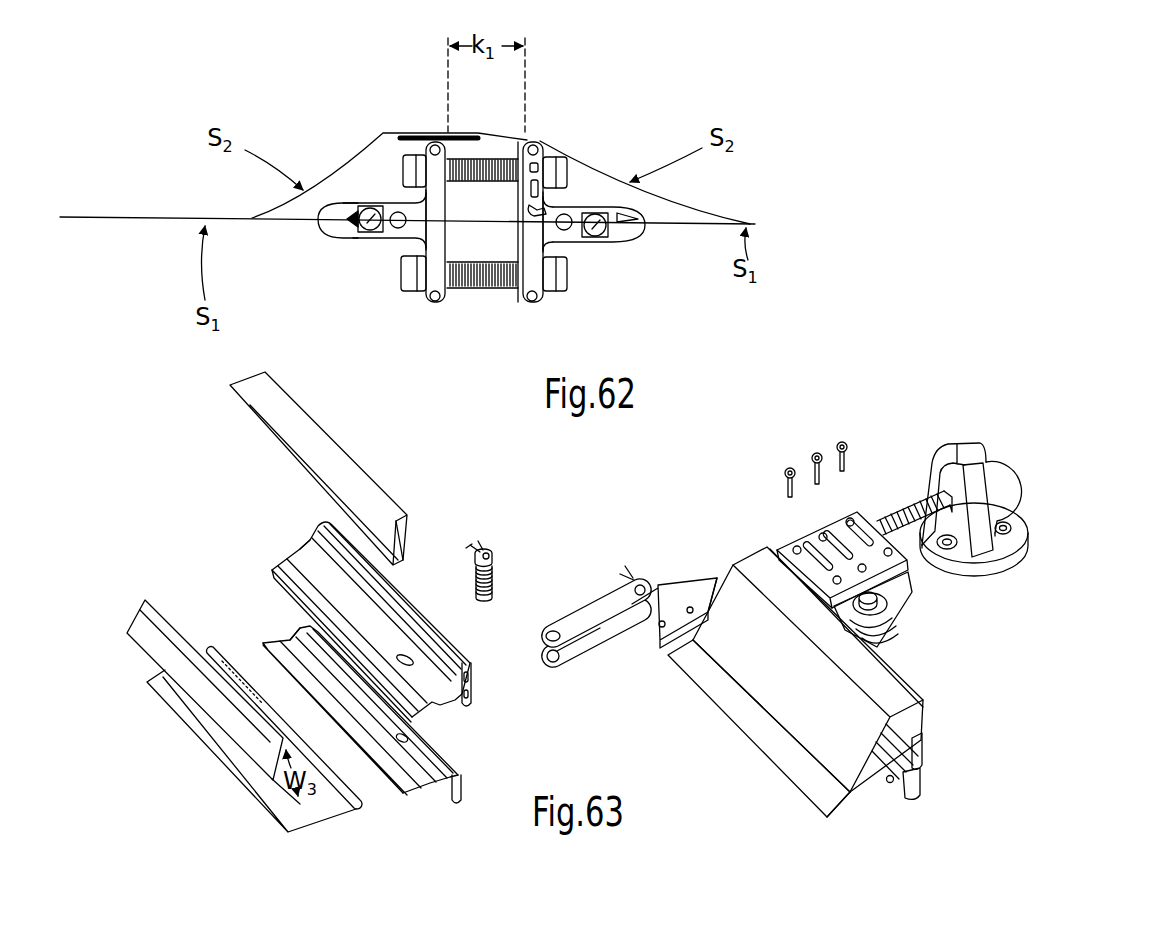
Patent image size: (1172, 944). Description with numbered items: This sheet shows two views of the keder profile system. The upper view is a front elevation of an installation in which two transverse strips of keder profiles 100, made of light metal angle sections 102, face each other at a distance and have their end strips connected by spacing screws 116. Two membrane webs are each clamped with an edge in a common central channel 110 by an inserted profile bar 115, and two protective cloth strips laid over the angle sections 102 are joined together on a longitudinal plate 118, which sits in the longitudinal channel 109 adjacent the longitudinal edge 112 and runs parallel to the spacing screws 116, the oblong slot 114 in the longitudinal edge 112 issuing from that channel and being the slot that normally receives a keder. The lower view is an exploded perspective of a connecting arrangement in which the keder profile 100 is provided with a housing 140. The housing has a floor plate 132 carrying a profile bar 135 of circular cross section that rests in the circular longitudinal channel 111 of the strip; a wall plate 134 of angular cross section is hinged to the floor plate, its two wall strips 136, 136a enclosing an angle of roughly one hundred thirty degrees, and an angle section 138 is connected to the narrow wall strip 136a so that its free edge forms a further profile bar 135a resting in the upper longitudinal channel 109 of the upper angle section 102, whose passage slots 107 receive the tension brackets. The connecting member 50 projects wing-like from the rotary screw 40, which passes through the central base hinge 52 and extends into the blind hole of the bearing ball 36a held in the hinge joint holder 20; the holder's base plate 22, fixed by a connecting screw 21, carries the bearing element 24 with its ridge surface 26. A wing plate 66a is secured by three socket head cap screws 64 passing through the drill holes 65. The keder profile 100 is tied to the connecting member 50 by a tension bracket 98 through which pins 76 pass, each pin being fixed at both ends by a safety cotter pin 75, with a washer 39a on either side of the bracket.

In FIG. 63, the hinge joint holder 20 is at (981, 437).
In FIG. 63, the connecting screw 21 is at (978, 527).
In FIG. 63, the base plate 22 is at (987, 578).
In FIG. 63, the bearing element 24 is at (983, 547).
In FIG. 63, the ridge surface 26 is at (957, 440).
In FIG. 63, the bearing ball 36a is at (1005, 471).
In FIG. 63, the washer 39a is at (480, 559).
In FIG. 63, the rotary screw 40 is at (900, 510).
In FIG. 63, the connecting member 50 is at (782, 521).
In FIG. 63, the central base hinge 52 is at (858, 500).
In FIG. 63, the socket head cap screws 64 is at (840, 442).
In FIG. 63, the drill holes 65 is at (655, 633).
In FIG. 63, the wing plate 66a is at (688, 572).
In FIG. 63, the safety cotter pin 75 is at (476, 542).
In FIG. 63, the pins 76 is at (494, 578).
In FIG. 63, the tension bracket 98 is at (617, 640).
In FIG. 63, the keder profile 100 is at (958, 772).
In FIG. 62, the angle sections 102 is at (360, 250).
In FIG. 63, the angle sections 102 is at (294, 551).
In FIG. 63, the passage slots 107 is at (463, 703).
In FIG. 62, the longitudinal channel 109 is at (540, 143).
In FIG. 62, the central channel 110 is at (372, 227).
In FIG. 62, the longitudinal channel 111 is at (397, 211).
In FIG. 63, the longitudinal channel 111 is at (890, 784).
In FIG. 62, the longitudinal edge 112 is at (521, 300).
In FIG. 63, the longitudinal edge 112 is at (458, 843).
In FIG. 62, the oblong slot 114 is at (433, 142).
In FIG. 63, the oblong slot 114 is at (463, 653).
In FIG. 62, the profile bar 115 is at (358, 229).
In FIG. 62, the spacing screws 116 is at (453, 264).
In FIG. 62, the longitudinal plate 118 is at (416, 136).
In FIG. 63, the floor plate 132 is at (246, 768).
In FIG. 63, the wall plate 134 is at (123, 609).
In FIG. 63, the profile bar 135 is at (228, 661).
In FIG. 63, the profile bar 135a is at (408, 560).
In FIG. 63, the wall strip 136 is at (770, 665).
In FIG. 63, the narrow wall strip 136a is at (150, 637).
In FIG. 63, the angle section 138 is at (368, 467).
In FIG. 63, the housing 140 is at (789, 746).